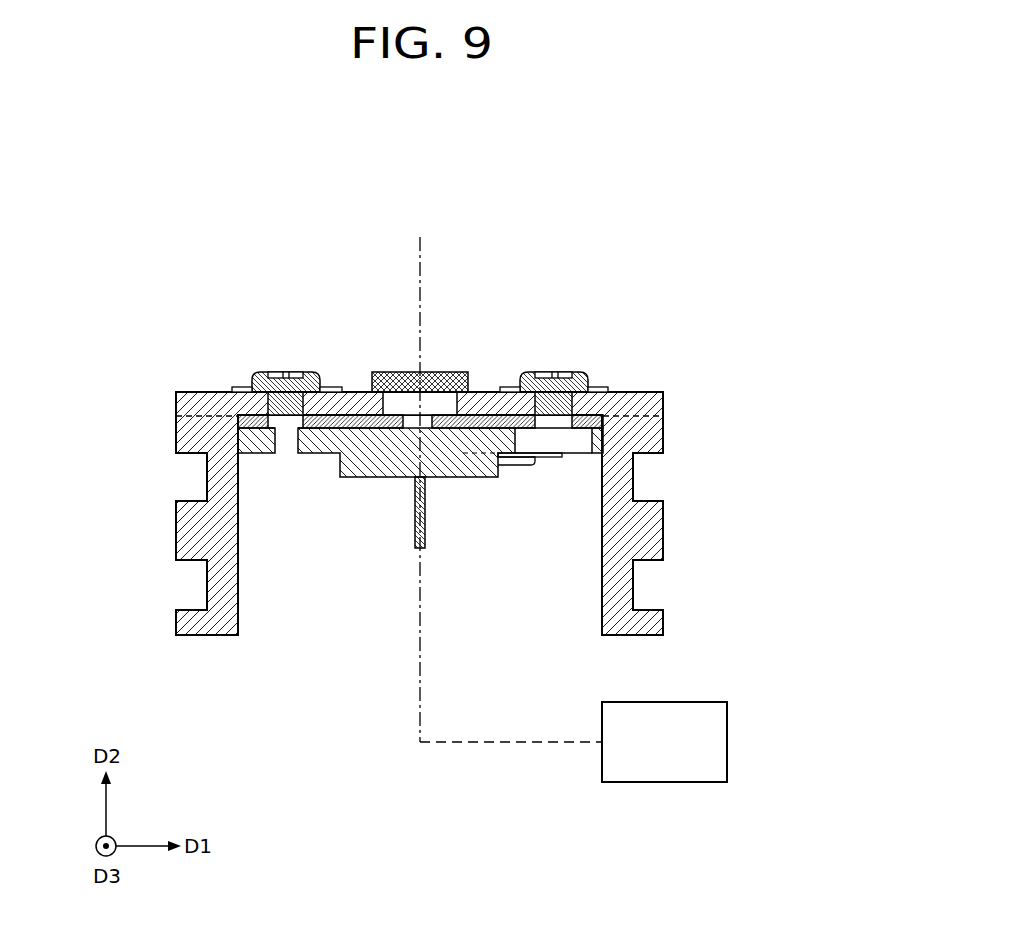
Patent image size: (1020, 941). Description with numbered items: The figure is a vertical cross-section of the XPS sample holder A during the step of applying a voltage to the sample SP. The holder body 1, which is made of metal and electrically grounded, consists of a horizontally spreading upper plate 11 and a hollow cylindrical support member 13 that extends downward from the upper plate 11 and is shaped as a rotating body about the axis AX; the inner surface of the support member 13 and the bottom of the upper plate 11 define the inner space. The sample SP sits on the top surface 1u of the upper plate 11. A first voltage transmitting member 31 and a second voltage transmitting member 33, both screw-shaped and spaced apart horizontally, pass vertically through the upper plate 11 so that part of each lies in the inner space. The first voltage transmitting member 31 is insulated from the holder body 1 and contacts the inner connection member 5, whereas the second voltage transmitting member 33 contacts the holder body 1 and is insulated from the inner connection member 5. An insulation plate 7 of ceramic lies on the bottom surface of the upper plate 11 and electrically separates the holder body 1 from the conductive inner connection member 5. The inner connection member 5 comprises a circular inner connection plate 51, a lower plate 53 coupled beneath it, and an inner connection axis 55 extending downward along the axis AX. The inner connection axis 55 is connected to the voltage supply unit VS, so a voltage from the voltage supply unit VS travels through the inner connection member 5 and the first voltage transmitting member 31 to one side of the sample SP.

The holder body 1 is at (478, 474).
The top surface 1u is at (205, 390).
The upper plate 11 is at (657, 403).
The support member 13 is at (624, 477).
The first voltage transmitting member 31 is at (307, 372).
The second voltage transmitting member 33 is at (568, 372).
The insulation plate 7 is at (482, 408).
The inner connection member 5 is at (420, 579).
The inner connection plate 51 is at (317, 445).
The lower plate 53 is at (357, 475).
The inner connection axis 55 is at (415, 533).
The sample SP is at (443, 372).
The axis AX is at (421, 252).
The voltage supply unit VS is at (663, 782).
The XPS sample holder A is at (640, 276).